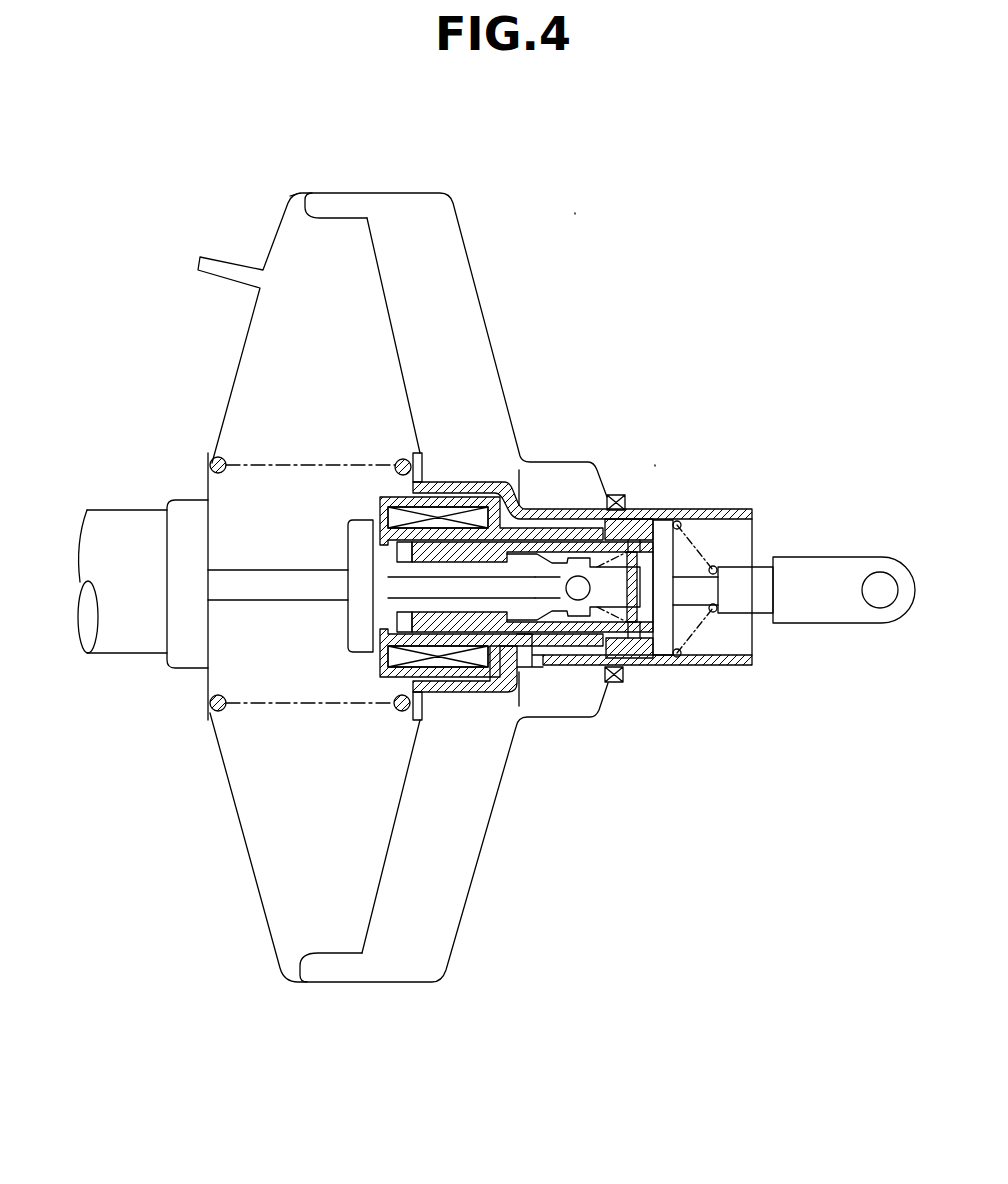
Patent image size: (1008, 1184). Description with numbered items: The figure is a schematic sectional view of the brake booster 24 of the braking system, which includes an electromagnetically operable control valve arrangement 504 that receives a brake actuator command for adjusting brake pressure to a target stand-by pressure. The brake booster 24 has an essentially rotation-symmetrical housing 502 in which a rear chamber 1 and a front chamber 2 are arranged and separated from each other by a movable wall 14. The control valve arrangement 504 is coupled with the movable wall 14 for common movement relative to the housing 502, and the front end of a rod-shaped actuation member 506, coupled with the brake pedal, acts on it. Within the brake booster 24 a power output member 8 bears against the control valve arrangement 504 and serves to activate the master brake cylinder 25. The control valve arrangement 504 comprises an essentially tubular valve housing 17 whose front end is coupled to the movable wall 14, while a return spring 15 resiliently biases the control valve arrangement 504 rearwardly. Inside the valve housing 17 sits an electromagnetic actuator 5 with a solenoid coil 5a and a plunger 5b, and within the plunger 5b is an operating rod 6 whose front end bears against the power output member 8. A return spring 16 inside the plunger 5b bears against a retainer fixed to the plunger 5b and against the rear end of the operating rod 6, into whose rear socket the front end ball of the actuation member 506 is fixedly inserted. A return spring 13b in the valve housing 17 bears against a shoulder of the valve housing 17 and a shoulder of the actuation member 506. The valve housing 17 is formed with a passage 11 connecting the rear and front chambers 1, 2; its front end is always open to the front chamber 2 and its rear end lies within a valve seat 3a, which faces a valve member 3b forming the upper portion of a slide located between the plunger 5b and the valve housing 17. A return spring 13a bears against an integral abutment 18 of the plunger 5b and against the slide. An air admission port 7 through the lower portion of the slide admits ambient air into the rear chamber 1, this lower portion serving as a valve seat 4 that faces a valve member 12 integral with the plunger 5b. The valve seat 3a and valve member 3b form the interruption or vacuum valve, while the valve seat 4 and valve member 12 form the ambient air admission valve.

The rear chamber 1 is at (445, 250).
The front chamber 2 is at (270, 346).
The movable wall 14 is at (383, 872).
The brake booster 24 is at (575, 213).
The housing 502 is at (378, 193).
The control valve arrangement 504 is at (655, 465).
The rod-shaped actuation member 506 is at (840, 557).
The master brake cylinder 25 is at (128, 516).
The return spring 15 is at (213, 460).
The power output member 8 is at (213, 580).
The electromagnetic actuator 5 is at (491, 473).
The solenoid coil 5a is at (438, 483).
The plunger 5b is at (490, 508).
The valve housing 17 is at (522, 476).
The operating rod 6 is at (545, 545).
The passage 11 is at (575, 530).
The valve seat 3a is at (617, 495).
The valve member 3b is at (640, 518).
The air admission port 7 is at (595, 668).
The valve member 12 is at (552, 667).
The valve seat 4 is at (632, 660).
The return spring 13a is at (678, 522).
The return spring 13b is at (714, 612).
The return spring 16 is at (660, 680).
The integral abutment 18 is at (710, 512).